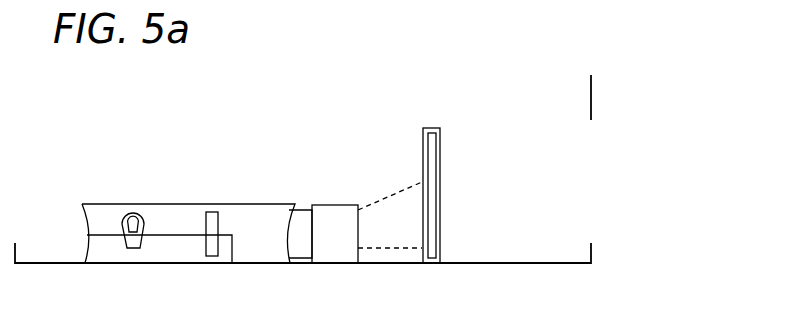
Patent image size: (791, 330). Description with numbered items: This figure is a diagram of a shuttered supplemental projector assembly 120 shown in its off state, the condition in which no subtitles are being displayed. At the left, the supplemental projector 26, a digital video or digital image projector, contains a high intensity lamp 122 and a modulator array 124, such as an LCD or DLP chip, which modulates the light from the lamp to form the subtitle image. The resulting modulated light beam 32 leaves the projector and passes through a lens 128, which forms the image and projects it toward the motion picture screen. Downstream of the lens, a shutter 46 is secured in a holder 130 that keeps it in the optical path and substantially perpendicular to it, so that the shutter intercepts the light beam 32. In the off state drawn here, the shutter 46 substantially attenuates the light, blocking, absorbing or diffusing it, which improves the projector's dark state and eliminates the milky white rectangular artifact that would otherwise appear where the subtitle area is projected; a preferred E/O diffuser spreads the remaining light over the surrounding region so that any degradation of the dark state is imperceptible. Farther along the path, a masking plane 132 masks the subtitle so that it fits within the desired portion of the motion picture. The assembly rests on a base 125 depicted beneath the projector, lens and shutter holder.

The shuttered supplemental projector assembly 120 is at (200, 108).
The high intensity lamp 122 is at (131, 211).
The supplemental projector 26 is at (158, 204).
The modulator array 124 is at (212, 212).
The base 125 is at (45, 263).
The lens 128 is at (335, 205).
The modulated light beam 32 is at (388, 197).
The shutter 46 is at (432, 128).
The holder 130 is at (440, 143).
The masking plane 132 is at (591, 90).